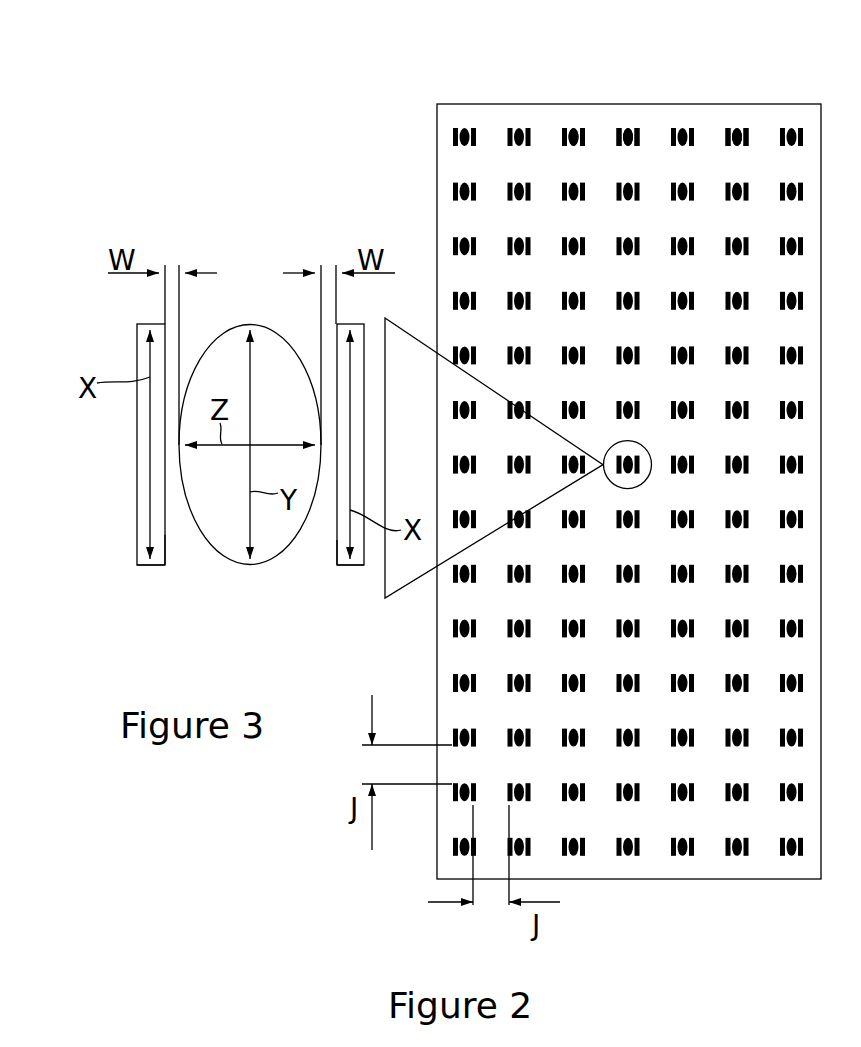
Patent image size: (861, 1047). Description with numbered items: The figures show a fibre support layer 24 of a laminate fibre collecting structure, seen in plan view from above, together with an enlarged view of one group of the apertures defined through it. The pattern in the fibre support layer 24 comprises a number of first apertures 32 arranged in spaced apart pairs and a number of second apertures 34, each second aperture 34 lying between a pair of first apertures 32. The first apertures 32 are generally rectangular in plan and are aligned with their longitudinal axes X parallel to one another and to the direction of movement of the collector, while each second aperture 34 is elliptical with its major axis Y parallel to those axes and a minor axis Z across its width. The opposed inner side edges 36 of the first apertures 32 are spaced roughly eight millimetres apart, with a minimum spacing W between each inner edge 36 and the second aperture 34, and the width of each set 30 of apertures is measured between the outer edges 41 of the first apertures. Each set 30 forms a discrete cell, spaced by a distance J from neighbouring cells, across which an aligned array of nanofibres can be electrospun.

In FIG. 2, the fibre support layer 24 is at (472, 165).
In FIG. 2, the first apertures 32 is at (562, 130).
In FIG. 3, the first apertures 32 is at (136, 512).
In FIG. 2, the second aperture 34 is at (737, 130).
In FIG. 3, the second aperture 34 is at (250, 324).
In FIG. 3, the inner side edges 36 is at (165, 535).
In FIG. 3, the outer edges 41 is at (136, 553).
In FIG. 2, the set of apertures 30 is at (272, 1046).